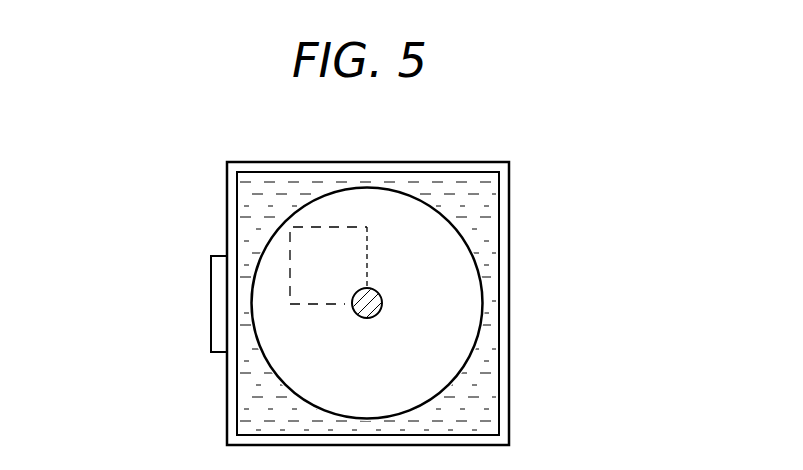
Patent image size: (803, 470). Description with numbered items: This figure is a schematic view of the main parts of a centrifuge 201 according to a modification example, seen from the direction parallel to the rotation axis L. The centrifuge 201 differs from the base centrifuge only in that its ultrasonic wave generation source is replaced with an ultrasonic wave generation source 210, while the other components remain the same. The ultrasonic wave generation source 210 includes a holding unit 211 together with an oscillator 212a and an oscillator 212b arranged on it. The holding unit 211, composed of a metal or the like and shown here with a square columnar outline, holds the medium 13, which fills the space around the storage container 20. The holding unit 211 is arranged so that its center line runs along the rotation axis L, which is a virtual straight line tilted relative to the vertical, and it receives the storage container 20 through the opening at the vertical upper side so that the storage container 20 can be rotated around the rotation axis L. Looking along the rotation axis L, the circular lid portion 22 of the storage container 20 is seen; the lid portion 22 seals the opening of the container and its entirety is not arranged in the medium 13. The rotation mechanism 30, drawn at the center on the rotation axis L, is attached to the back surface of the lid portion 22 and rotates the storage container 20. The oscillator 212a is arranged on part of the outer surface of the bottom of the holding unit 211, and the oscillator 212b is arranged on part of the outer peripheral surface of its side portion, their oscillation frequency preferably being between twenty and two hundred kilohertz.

The centrifuge 201 is at (538, 176).
The ultrasonic wave generation source 210 is at (150, 162).
The holding unit 211 is at (227, 230).
The medium 13 is at (297, 203).
The oscillator 212a is at (305, 232).
The oscillator 212b is at (211, 283).
The lid portion 22 is at (462, 323).
The storage container 20 is at (420, 303).
The rotation mechanism 30 is at (380, 313).
The rotation axis L is at (355, 308).